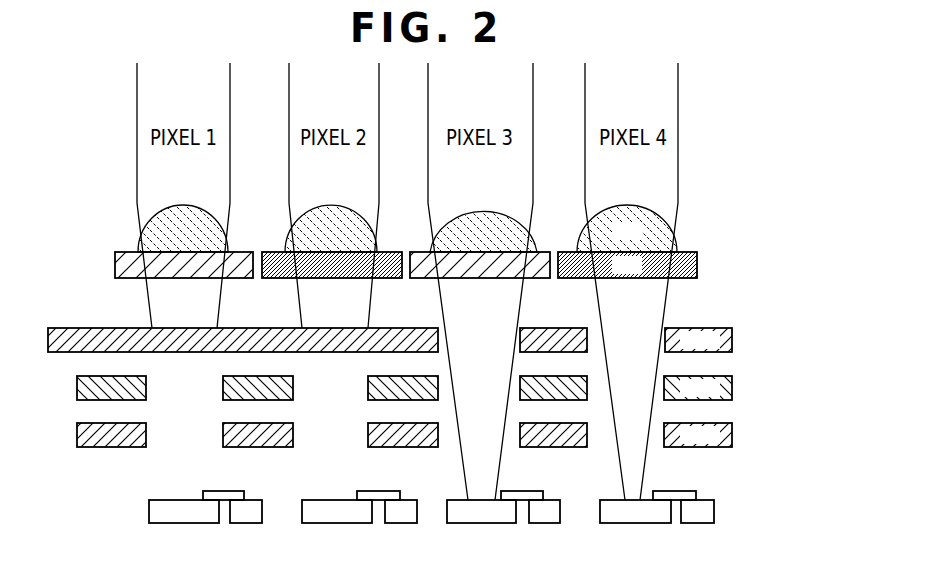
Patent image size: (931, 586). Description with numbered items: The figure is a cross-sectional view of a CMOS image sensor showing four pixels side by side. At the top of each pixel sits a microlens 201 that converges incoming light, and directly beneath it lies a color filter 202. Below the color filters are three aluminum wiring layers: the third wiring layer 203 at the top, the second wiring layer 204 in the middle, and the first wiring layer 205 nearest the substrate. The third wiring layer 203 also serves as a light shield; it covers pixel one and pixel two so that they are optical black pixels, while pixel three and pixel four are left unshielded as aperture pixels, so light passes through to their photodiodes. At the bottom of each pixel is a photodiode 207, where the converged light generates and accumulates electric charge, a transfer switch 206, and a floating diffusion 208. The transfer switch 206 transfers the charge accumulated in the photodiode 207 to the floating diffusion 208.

The microlens 201 is at (676, 224).
The color filter 202 is at (698, 265).
The wiring layer AL3 203 is at (733, 340).
The wiring layer AL2 204 is at (733, 388).
The wiring layer AL1 205 is at (733, 436).
The transfer switch 206 is at (673, 491).
The photodiode 207 is at (637, 524).
The floating diffusion 208 is at (697, 524).